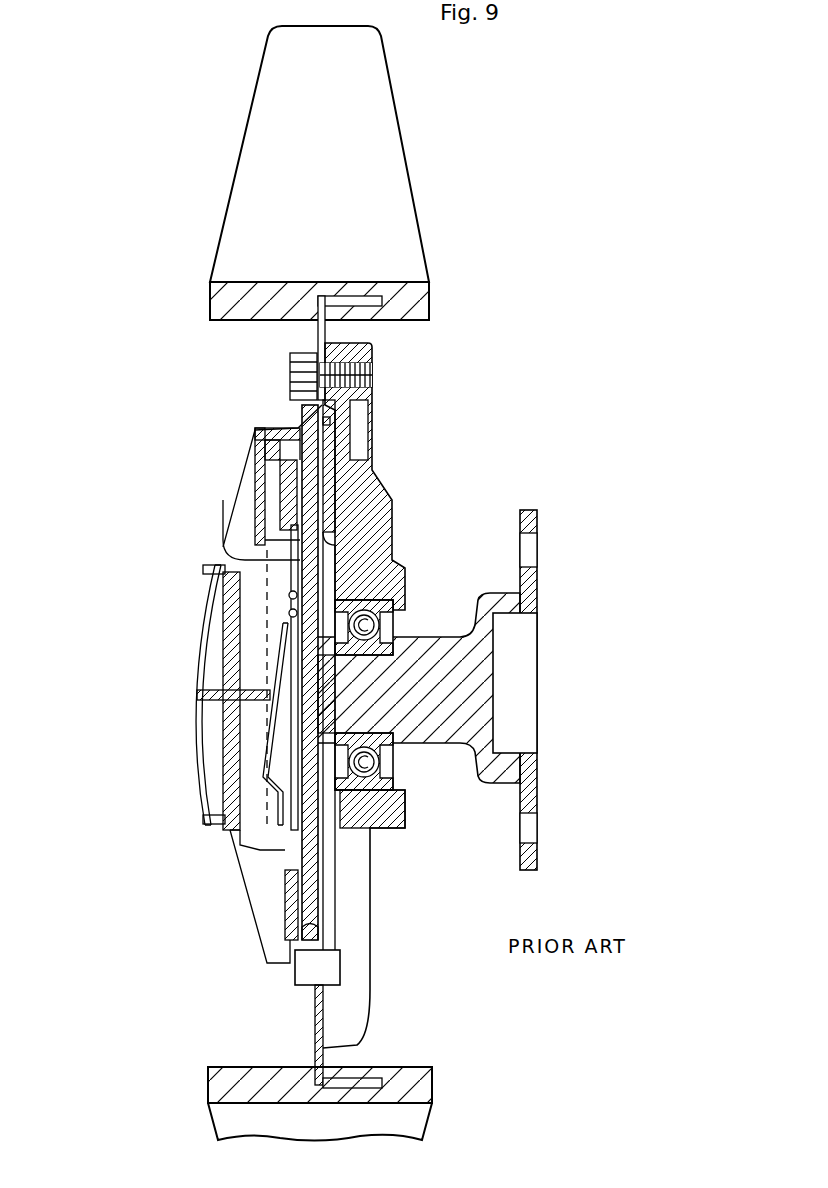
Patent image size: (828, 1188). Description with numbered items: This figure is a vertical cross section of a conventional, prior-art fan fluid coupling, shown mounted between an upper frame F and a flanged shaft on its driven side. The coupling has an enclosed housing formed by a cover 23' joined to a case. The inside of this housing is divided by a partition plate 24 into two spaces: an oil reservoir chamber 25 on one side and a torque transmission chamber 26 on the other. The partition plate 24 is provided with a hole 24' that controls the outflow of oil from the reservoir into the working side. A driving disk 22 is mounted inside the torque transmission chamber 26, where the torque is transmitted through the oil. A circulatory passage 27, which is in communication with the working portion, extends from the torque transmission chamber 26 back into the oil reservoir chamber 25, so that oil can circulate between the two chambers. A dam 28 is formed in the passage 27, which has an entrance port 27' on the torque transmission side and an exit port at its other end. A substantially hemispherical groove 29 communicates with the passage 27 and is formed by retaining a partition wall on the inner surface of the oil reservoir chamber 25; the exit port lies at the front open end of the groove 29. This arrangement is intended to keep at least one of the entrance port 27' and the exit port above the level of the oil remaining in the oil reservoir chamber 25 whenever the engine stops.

The frame F is at (405, 190).
The driving disk 22 is at (312, 533).
The cover 23' is at (252, 482).
The partition plate 24 is at (244, 758).
The hole 24' is at (389, 919).
The oil reservoir chamber 25 is at (257, 605).
The torque transmission chamber 26 is at (370, 590).
The circulatory passage 27 is at (243, 493).
The entrance port 27' is at (264, 419).
The dam 28 is at (322, 458).
The hemispherical groove 29 is at (275, 660).